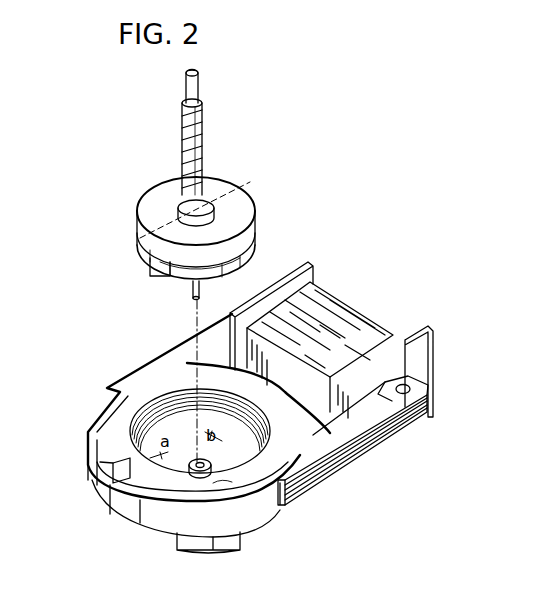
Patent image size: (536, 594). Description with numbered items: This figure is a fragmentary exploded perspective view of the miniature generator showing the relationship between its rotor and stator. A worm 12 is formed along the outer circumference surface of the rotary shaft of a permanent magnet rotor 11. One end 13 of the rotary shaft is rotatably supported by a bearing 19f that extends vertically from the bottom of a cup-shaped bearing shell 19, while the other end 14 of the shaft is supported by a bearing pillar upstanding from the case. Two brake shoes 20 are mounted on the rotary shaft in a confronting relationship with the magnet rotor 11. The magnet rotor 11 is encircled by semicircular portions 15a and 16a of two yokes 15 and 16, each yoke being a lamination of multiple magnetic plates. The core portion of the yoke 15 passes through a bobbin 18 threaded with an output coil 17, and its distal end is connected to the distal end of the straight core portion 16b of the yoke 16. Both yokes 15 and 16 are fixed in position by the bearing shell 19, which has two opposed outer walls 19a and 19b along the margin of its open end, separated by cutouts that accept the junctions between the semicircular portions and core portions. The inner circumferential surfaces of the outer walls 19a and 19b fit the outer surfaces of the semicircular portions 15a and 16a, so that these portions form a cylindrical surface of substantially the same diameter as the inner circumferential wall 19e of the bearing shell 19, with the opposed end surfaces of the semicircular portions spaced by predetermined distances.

The permanent magnet rotor 11 is at (238, 200).
The worm 12 is at (182, 132).
The one end of the rotary shaft 13 is at (192, 292).
The other end of the rotary shaft 14 is at (198, 80).
The yoke 15 is at (160, 366).
The semicircular portion 15a is at (112, 427).
The yoke 16 is at (288, 461).
The semicircular portion 16a is at (220, 486).
The straight core portion 16b is at (393, 418).
The output coil 17 is at (330, 292).
The bobbin 18 is at (403, 331).
The bearing shell 19 is at (110, 508).
The outer wall 19a is at (100, 463).
The outer wall 19b is at (380, 414).
The inner circumferential wall 19e is at (270, 486).
The bearing 19f is at (195, 472).
The brake shoes 20 is at (142, 276).